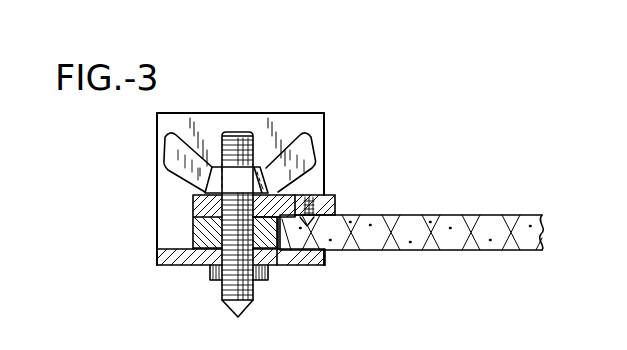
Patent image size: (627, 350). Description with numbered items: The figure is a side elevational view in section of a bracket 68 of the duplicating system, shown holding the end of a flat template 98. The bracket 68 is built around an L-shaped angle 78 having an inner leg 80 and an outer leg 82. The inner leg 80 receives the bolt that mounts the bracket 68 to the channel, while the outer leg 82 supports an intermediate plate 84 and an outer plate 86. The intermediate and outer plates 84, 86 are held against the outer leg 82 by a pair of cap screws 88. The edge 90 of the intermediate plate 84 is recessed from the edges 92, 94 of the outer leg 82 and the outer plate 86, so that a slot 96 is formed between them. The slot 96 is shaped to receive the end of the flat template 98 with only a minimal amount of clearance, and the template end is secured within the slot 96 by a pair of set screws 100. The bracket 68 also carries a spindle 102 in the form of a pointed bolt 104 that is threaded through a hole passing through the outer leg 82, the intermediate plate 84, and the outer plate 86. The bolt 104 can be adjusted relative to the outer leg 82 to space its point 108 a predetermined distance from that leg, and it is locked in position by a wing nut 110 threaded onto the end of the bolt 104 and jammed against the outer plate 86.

The bracket 68 is at (326, 147).
The L-shaped angle 78 is at (178, 195).
The inner leg 80 is at (176, 122).
The outer leg 82 is at (157, 254).
The intermediate plate 84 is at (277, 266).
The outer plate 86 is at (337, 200).
The cap screws 88 is at (210, 272).
The edge of the intermediate plate 90 is at (283, 237).
The edge of the outer leg 92 is at (326, 253).
The edge of the outer plate 94 is at (337, 212).
The slot 96 is at (300, 266).
The flat template 98 is at (507, 219).
The set screws 100 is at (325, 176).
The spindle 102 is at (240, 131).
The pointed bolt 104 is at (255, 142).
The point 108 is at (240, 318).
The wing nut 110 is at (298, 150).